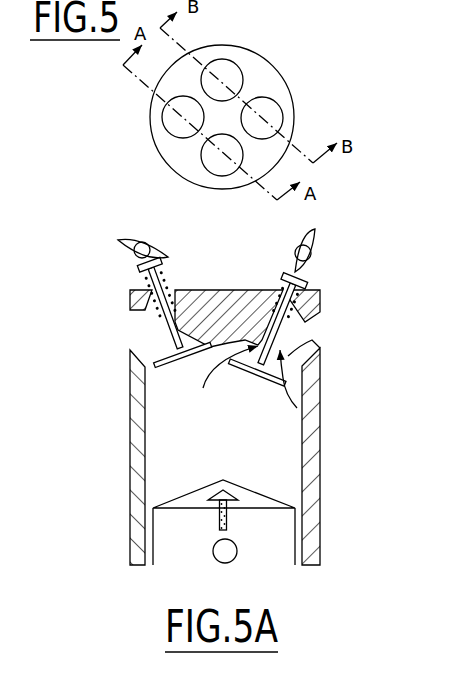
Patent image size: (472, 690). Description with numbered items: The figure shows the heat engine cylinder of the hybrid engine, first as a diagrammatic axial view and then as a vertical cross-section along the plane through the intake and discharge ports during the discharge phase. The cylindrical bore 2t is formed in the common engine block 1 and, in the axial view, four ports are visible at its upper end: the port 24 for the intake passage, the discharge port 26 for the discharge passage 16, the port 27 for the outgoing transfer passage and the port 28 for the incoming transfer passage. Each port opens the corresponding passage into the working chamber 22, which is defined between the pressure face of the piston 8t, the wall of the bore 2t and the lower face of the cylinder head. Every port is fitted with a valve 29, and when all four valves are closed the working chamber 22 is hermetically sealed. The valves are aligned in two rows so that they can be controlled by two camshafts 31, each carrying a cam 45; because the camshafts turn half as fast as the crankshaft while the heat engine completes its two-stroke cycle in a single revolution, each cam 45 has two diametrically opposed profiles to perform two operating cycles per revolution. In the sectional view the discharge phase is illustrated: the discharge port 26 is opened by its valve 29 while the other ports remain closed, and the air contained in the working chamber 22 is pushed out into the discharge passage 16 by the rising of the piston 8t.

In FIG. 5, the cylindrical bore 2t is at (280, 75).
In FIG. 5, the port 28 is at (247, 66).
In FIG. 5, the port 27 is at (283, 110).
In FIG. 5, the port 24 is at (163, 130).
In FIG. 5, the discharge port 26 is at (200, 163).
In FIG. 5A, the discharge port 26 is at (292, 347).
In FIG. 5A, the cam 45 is at (133, 237).
In FIG. 5A, the camshaft 31 is at (135, 253).
In FIG. 5A, the valve 29 is at (163, 335).
In FIG. 5A, the discharge passage 16 is at (305, 322).
In FIG. 5A, the working chamber 22 is at (230, 395).
In FIG. 5A, the engine block 1 is at (312, 462).
In FIG. 5A, the piston 8t is at (310, 537).